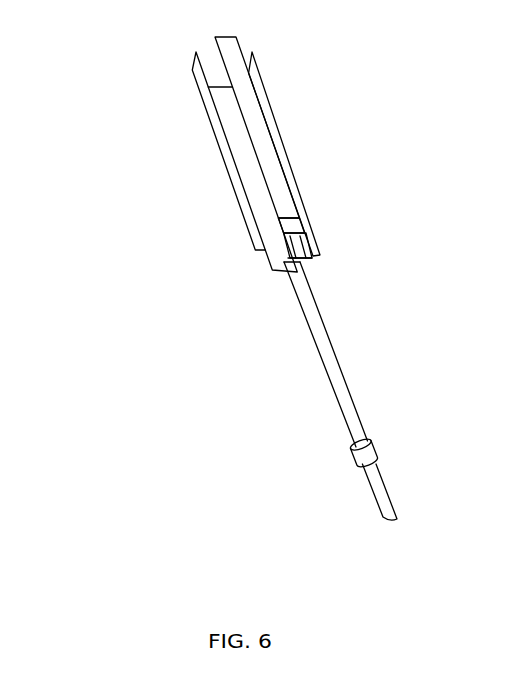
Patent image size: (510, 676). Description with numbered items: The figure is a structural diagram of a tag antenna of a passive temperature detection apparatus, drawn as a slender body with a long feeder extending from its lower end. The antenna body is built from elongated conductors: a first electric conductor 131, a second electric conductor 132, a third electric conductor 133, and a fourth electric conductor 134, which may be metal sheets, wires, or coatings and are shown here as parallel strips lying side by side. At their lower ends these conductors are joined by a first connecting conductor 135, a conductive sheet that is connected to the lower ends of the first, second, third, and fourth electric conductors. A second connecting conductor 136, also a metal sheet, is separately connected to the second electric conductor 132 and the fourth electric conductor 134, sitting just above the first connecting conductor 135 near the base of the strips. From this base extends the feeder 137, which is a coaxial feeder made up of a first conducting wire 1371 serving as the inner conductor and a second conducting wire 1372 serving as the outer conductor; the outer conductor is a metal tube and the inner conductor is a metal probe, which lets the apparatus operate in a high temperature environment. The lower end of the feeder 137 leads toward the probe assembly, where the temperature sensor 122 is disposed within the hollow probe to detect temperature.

The temperature sensor 122 is at (378, 504).
The first electric conductor 131 is at (238, 162).
The second electric conductor 132 is at (192, 70).
The third electric conductor 133 is at (236, 56).
The fourth electric conductor 134 is at (273, 104).
The first connecting conductor 135 is at (313, 262).
The second connecting conductor 136 is at (310, 241).
The feeder 137 is at (353, 445).
The first conducting wire 1371 is at (288, 262).
The second conducting wire 1372 is at (340, 357).